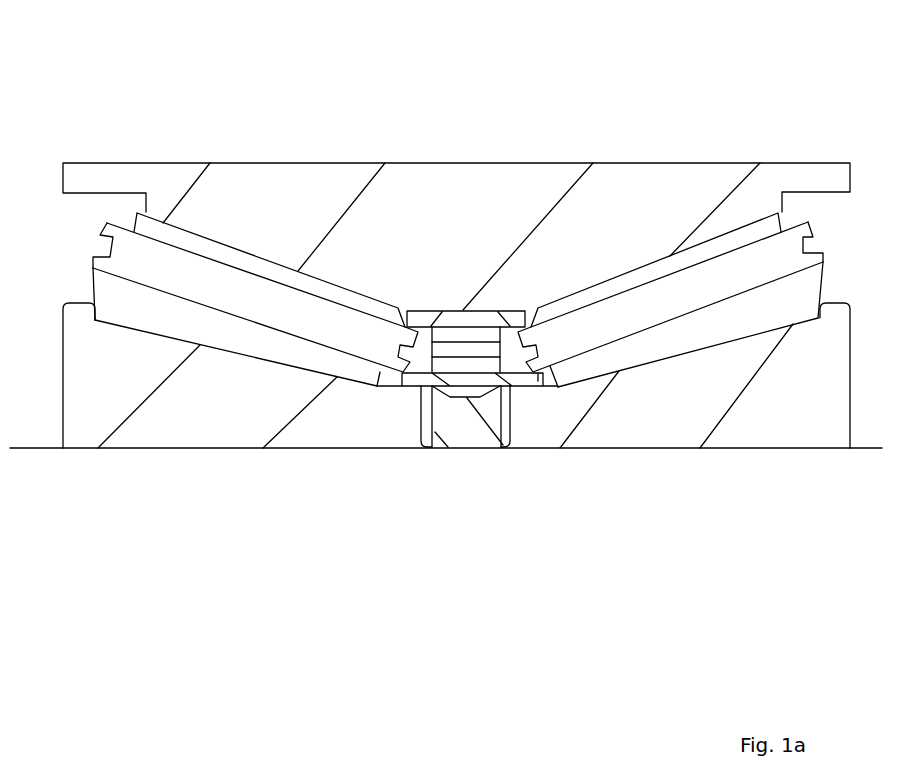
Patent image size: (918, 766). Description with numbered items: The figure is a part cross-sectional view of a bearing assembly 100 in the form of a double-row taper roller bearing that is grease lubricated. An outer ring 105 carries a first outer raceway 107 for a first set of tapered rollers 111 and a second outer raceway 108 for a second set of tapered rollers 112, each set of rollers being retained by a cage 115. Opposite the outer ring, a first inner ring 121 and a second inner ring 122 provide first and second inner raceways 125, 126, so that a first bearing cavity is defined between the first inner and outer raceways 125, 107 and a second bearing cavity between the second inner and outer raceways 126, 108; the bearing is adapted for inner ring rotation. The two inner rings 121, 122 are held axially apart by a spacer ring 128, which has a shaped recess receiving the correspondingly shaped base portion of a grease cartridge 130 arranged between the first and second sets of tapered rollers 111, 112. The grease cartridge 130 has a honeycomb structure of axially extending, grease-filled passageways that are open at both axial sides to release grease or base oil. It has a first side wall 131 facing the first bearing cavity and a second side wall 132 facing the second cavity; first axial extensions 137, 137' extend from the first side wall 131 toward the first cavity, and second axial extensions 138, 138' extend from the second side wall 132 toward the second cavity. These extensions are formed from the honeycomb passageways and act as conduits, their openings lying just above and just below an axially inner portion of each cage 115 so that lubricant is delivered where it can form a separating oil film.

The bearing assembly 100 is at (397, 108).
The outer ring 105 is at (465, 180).
The first outer raceway 107 is at (252, 247).
The second outer raceway 108 is at (657, 253).
The first set of tapered rollers 111 is at (287, 350).
The second set of tapered rollers 112 is at (627, 348).
The cage 115 is at (117, 277).
The first inner ring 121 is at (270, 430).
The second inner ring 122 is at (637, 427).
The first inner raceway 125 is at (224, 352).
The second inner raceway 126 is at (730, 342).
The spacer ring 128 is at (477, 432).
The grease cartridge 130 is at (462, 375).
The first side wall 131 is at (436, 342).
The second side wall 132 is at (497, 352).
The first axial extension 137 is at (276, 215).
The second axial extension 138 is at (651, 207).
The first axial extension 137' is at (394, 449).
The second axial extension 138' is at (556, 442).